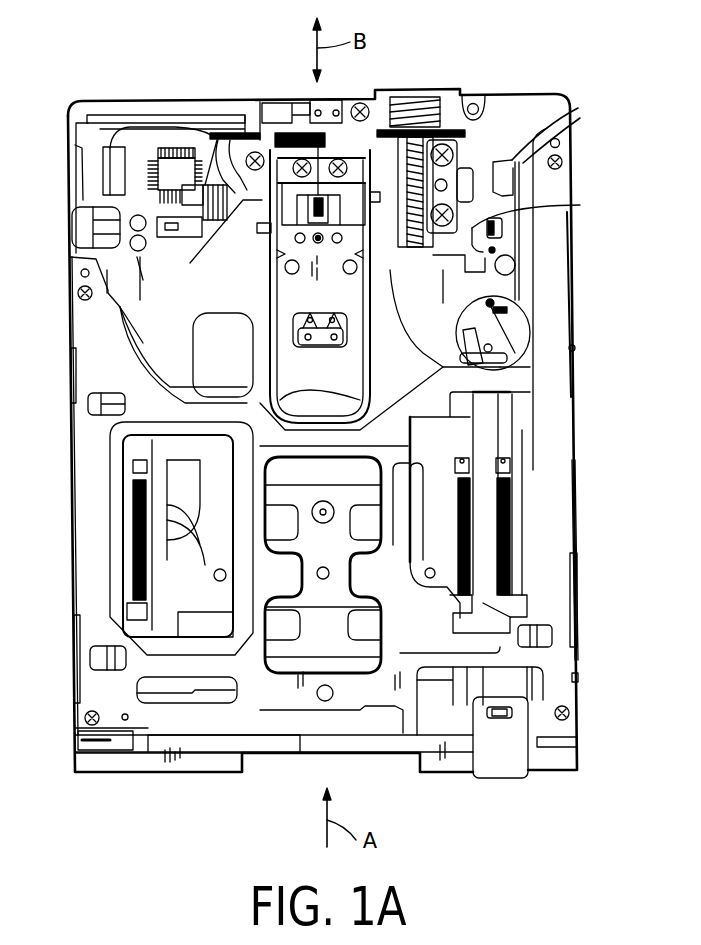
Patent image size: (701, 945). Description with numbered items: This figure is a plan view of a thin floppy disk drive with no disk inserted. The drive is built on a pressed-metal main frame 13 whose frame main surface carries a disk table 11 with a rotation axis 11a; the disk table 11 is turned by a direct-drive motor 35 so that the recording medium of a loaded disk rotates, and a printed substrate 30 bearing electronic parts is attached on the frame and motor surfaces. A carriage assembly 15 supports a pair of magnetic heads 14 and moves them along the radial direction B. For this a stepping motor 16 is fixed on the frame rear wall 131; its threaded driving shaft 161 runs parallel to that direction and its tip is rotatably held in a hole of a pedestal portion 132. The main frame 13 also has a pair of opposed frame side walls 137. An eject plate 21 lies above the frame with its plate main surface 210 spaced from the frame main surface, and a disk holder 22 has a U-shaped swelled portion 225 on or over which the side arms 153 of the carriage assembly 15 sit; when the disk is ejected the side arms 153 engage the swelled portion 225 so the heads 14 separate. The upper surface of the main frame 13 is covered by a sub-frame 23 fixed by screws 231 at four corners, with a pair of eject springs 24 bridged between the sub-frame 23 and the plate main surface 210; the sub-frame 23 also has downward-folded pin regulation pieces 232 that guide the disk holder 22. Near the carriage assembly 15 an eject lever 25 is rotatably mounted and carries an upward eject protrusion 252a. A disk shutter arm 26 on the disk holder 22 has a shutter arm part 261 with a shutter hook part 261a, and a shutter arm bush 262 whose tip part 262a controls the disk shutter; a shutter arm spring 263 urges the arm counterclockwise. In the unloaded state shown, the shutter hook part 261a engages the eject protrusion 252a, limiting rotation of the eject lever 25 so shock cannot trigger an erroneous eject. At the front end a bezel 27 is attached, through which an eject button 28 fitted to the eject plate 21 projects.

The disk table 11 is at (367, 515).
The rotation axis 11a is at (330, 520).
The main frame 13 is at (578, 598).
The magnetic heads 14 is at (510, 387).
The carriage assembly 15 is at (272, 294).
The stepping motor 16 is at (447, 95).
The eject plate 21 is at (135, 456).
The disk holder 22 is at (143, 343).
The sub-frame 23 is at (93, 515).
The eject springs 24 is at (132, 557).
The eject lever 25 is at (578, 108).
The disk shutter arm 26 is at (515, 338).
The front bezel 27 is at (75, 753).
The eject button 28 is at (510, 780).
The printed substrate 30 is at (167, 137).
The direct-drive motor 35 is at (280, 415).
The frame rear wall 131 is at (490, 97).
The pedestal portion 132 is at (515, 192).
The frame side walls 137 is at (80, 228).
The side arms 153 is at (258, 230).
The driving shaft 161 is at (460, 162).
The plate main surface 210 is at (197, 600).
The swelled portion 225 is at (216, 134).
The screws 231 is at (563, 160).
The pin regulation pieces 232 is at (575, 360).
The eject protrusion 252a is at (496, 250).
The shutter arm part 261 is at (516, 266).
The shutter hook part 261a is at (497, 218).
The shutter arm bush 262 is at (494, 303).
The tip part 262a is at (520, 367).
The shutter arm spring 263 is at (470, 548).